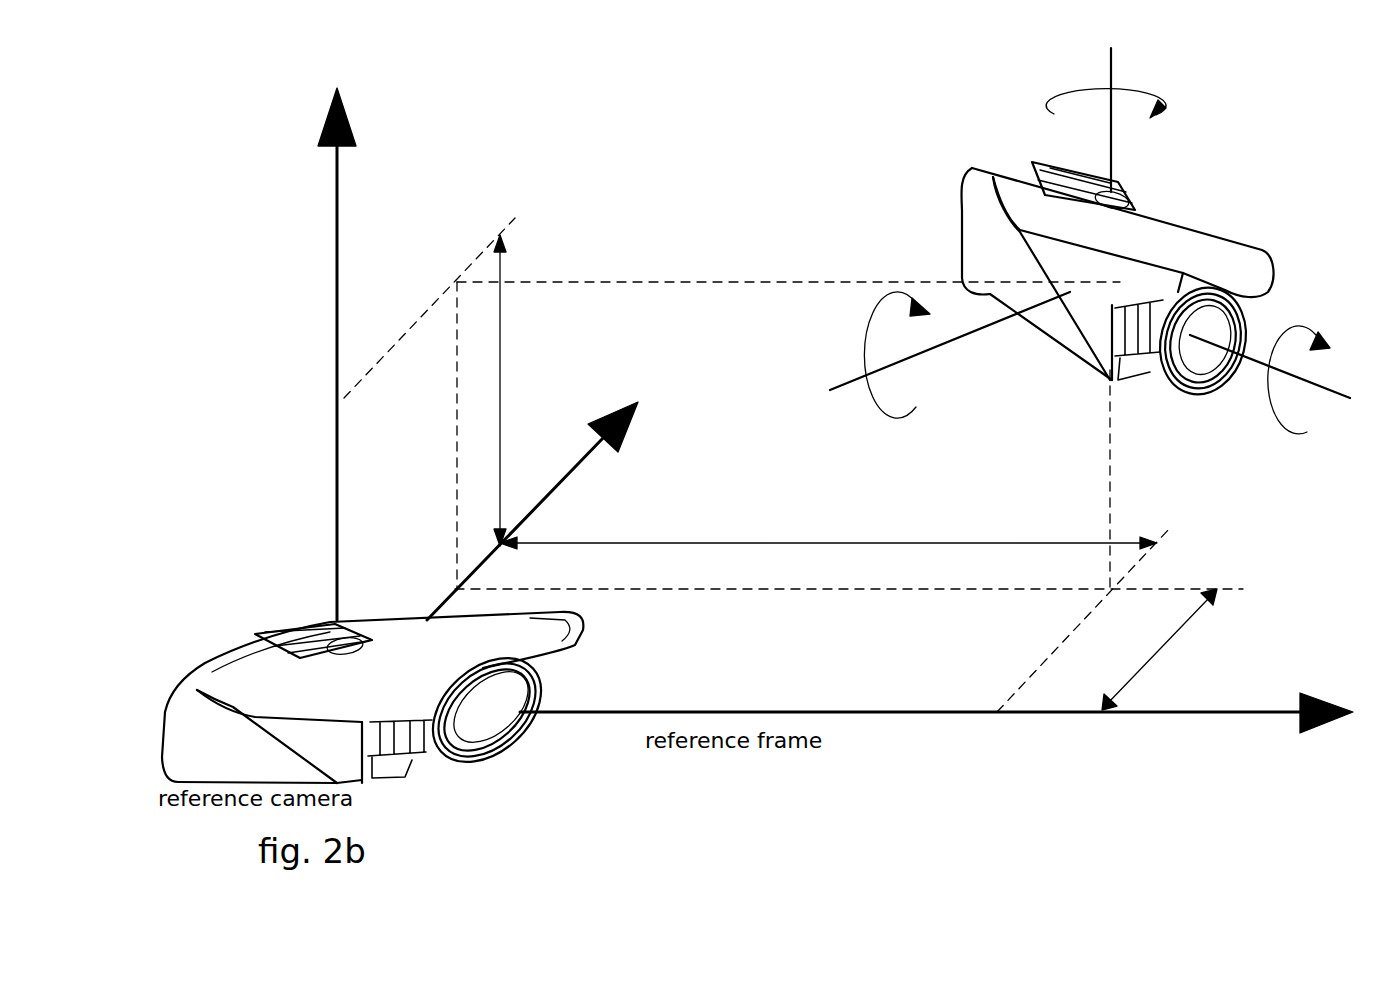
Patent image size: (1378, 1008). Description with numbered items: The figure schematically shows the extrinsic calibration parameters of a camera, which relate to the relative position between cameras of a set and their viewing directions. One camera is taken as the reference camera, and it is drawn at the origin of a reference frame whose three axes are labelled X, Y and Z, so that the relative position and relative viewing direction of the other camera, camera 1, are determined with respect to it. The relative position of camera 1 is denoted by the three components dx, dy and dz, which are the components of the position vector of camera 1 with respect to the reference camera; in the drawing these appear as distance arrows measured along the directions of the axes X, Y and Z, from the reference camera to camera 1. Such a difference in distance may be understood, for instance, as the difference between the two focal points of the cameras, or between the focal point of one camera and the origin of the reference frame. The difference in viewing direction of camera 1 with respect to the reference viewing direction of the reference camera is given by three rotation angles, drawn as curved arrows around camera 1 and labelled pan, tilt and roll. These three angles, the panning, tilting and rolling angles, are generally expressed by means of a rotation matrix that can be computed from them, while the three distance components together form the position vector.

The camera 1 is at (1127, 283).
The X axis of the reference frame X is at (936, 731).
The Y axis of the reference frame Y is at (532, 511).
The Z axis of the reference frame Z is at (327, 352).
The x component of the relative position dx is at (828, 529).
The y component of the relative position dy is at (1159, 649).
The z component of the relative position dz is at (509, 390).
The panning angle pan is at (1137, 120).
The tilting angle tilt is at (950, 355).
The rolling angle roll is at (1279, 380).